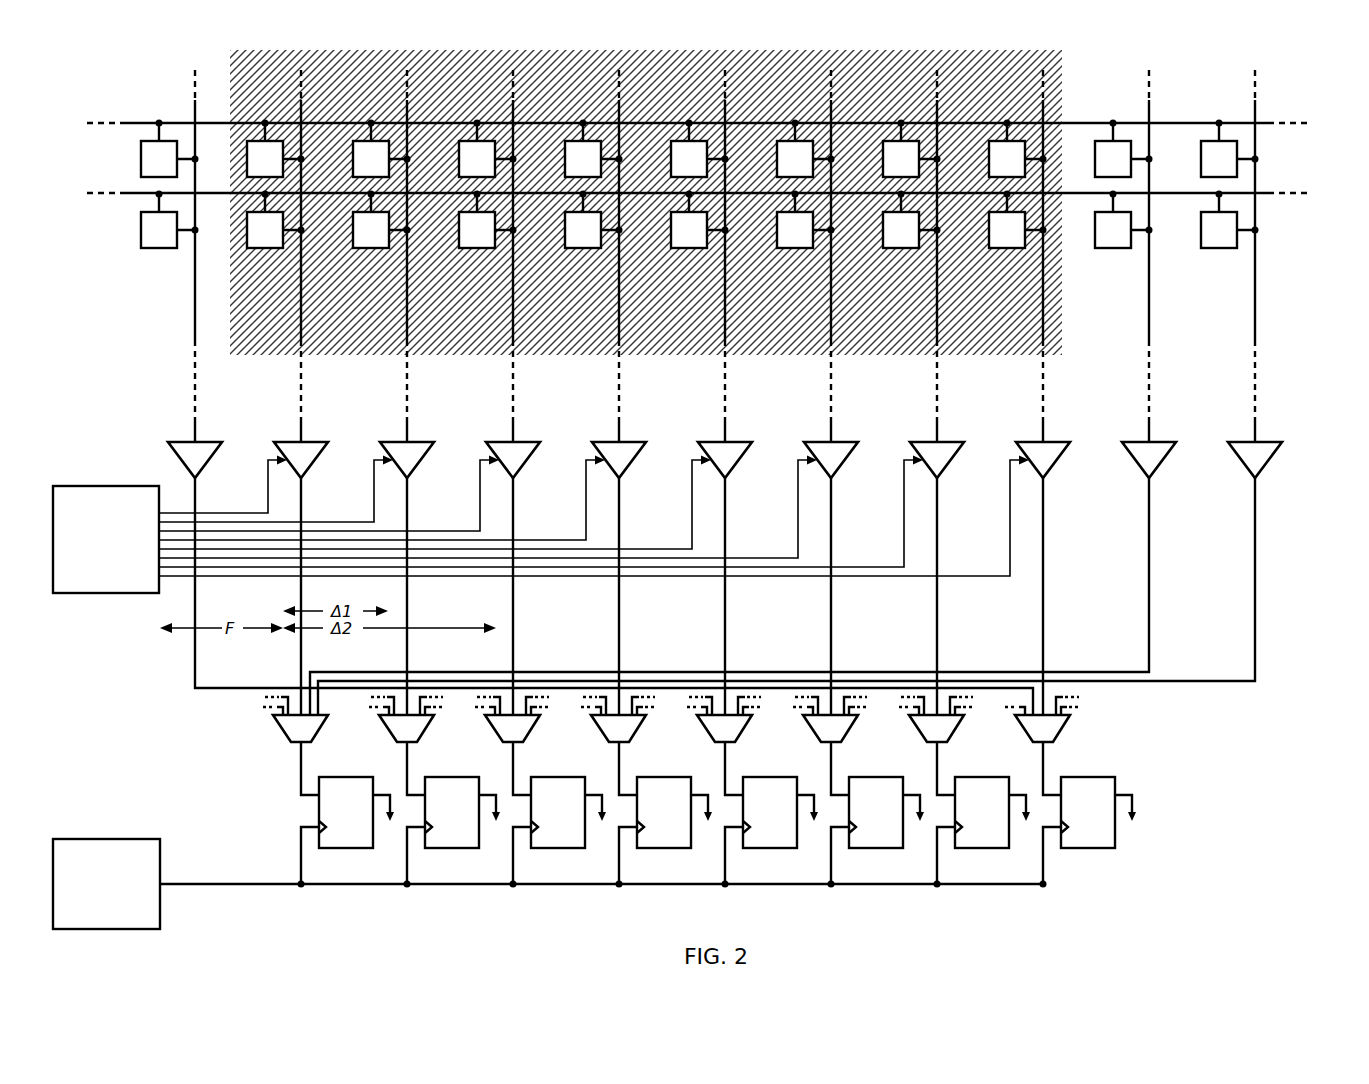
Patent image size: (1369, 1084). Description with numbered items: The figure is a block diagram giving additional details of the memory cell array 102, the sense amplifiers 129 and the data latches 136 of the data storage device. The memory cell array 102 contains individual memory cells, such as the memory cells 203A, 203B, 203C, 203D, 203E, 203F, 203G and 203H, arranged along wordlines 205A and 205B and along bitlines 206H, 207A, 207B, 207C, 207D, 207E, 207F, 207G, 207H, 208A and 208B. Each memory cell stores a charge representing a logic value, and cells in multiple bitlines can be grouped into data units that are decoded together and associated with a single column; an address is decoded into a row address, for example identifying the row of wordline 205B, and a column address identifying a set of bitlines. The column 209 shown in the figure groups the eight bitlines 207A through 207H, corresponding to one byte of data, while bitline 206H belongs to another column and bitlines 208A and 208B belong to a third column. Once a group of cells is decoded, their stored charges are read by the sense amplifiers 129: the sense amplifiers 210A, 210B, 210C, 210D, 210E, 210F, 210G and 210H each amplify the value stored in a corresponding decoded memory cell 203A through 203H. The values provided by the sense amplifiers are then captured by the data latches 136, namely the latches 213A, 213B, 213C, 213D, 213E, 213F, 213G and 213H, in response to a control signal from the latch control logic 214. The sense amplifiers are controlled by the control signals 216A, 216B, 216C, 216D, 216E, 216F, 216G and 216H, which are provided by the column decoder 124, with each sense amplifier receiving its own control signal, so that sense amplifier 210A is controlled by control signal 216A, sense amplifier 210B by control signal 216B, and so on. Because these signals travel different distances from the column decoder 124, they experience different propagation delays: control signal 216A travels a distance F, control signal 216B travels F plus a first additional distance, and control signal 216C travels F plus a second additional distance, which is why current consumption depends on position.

The memory cell array 102 is at (151, 304).
The column decoder 124 is at (125, 593).
The sense amplifiers 129 is at (1293, 463).
The data latches 136 is at (1178, 817).
The memory cell 203A is at (257, 241).
The memory cell 203B is at (363, 241).
The memory cell 203C is at (469, 241).
The memory cell 203D is at (575, 241).
The memory cell 203E is at (681, 241).
The memory cell 203F is at (787, 241).
The memory cell 203G is at (893, 241).
The memory cell 203H is at (999, 241).
The wordline 205A is at (1268, 123).
The wordline 205B is at (1268, 193).
The bitline 206H is at (232, 256).
The bitline 207A is at (340, 256).
The bitline 207B is at (446, 256).
The bitline 207C is at (552, 256).
The bitline 207D is at (658, 256).
The bitline 207E is at (764, 256).
The bitline 207F is at (870, 256).
The bitline 207G is at (976, 256).
The bitline 207H is at (1082, 256).
The bitline 208A is at (1185, 256).
The bitline 208B is at (1291, 256).
The column 209 is at (1062, 306).
The sense amplifier 210A is at (324, 564).
The sense amplifier 210B is at (431, 564).
The sense amplifier 210C is at (537, 564).
The sense amplifier 210D is at (643, 564).
The sense amplifier 210E is at (749, 564).
The sense amplifier 210F is at (854, 564).
The sense amplifier 210G is at (961, 564).
The sense amplifier 210H is at (1067, 564).
The latch 213A is at (363, 798).
The latch 213B is at (469, 798).
The latch 213C is at (575, 798).
The latch 213D is at (681, 798).
The latch 213E is at (787, 798).
The latch 213F is at (893, 798).
The latch 213G is at (999, 798).
The latch 213H is at (1105, 798).
The latch control logic 214 is at (143, 839).
The control signal 216A is at (223, 485).
The control signal 216B is at (276, 489).
The control signal 216C is at (329, 494).
The control signal 216D is at (382, 498).
The control signal 216E is at (435, 503).
The control signal 216F is at (488, 507).
The control signal 216G is at (541, 512).
The control signal 216H is at (594, 516).